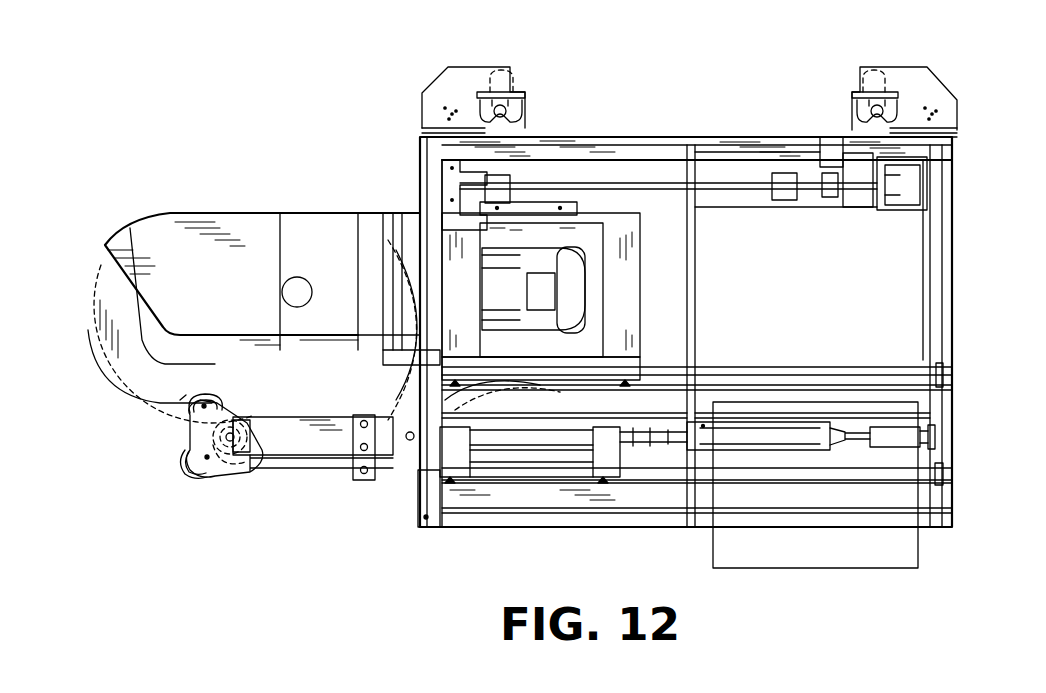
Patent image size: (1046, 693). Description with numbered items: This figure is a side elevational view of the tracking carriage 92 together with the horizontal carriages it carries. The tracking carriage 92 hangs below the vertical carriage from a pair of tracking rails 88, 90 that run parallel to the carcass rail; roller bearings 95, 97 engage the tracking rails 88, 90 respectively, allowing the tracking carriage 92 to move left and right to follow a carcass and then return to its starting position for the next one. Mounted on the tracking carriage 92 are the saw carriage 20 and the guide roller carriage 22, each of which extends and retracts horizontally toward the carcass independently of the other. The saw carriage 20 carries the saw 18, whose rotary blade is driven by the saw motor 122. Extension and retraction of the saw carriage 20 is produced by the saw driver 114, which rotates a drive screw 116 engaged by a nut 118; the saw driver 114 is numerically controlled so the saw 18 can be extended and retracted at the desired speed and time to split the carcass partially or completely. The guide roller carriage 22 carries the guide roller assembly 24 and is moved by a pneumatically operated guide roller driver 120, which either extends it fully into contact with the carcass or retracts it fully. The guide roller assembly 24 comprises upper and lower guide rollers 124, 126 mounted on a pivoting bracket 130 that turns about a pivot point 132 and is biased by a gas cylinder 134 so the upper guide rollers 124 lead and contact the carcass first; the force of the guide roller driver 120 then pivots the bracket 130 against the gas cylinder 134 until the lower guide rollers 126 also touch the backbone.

The tracking carriage 92 is at (402, 103).
The roller bearing 95 is at (520, 100).
The tracking rail 88 is at (508, 128).
The roller bearing 97 is at (860, 110).
The tracking rail 90 is at (858, 127).
The nut 118 is at (497, 185).
The drive screw 116 is at (748, 185).
The saw driver 114 is at (910, 190).
The saw motor 122 is at (520, 297).
The guide roller driver 120 is at (768, 428).
The saw carriage 20 is at (250, 205).
The saw 18 is at (150, 378).
The pivoting bracket 130 is at (226, 470).
The upper guide roller 124 is at (186, 416).
The lower guide roller 126 is at (182, 456).
The pivot point 132 is at (234, 432).
The guide roller carriage 22 is at (320, 488).
The gas cylinder 134 is at (282, 477).
The guide roller assembly 24 is at (160, 495).